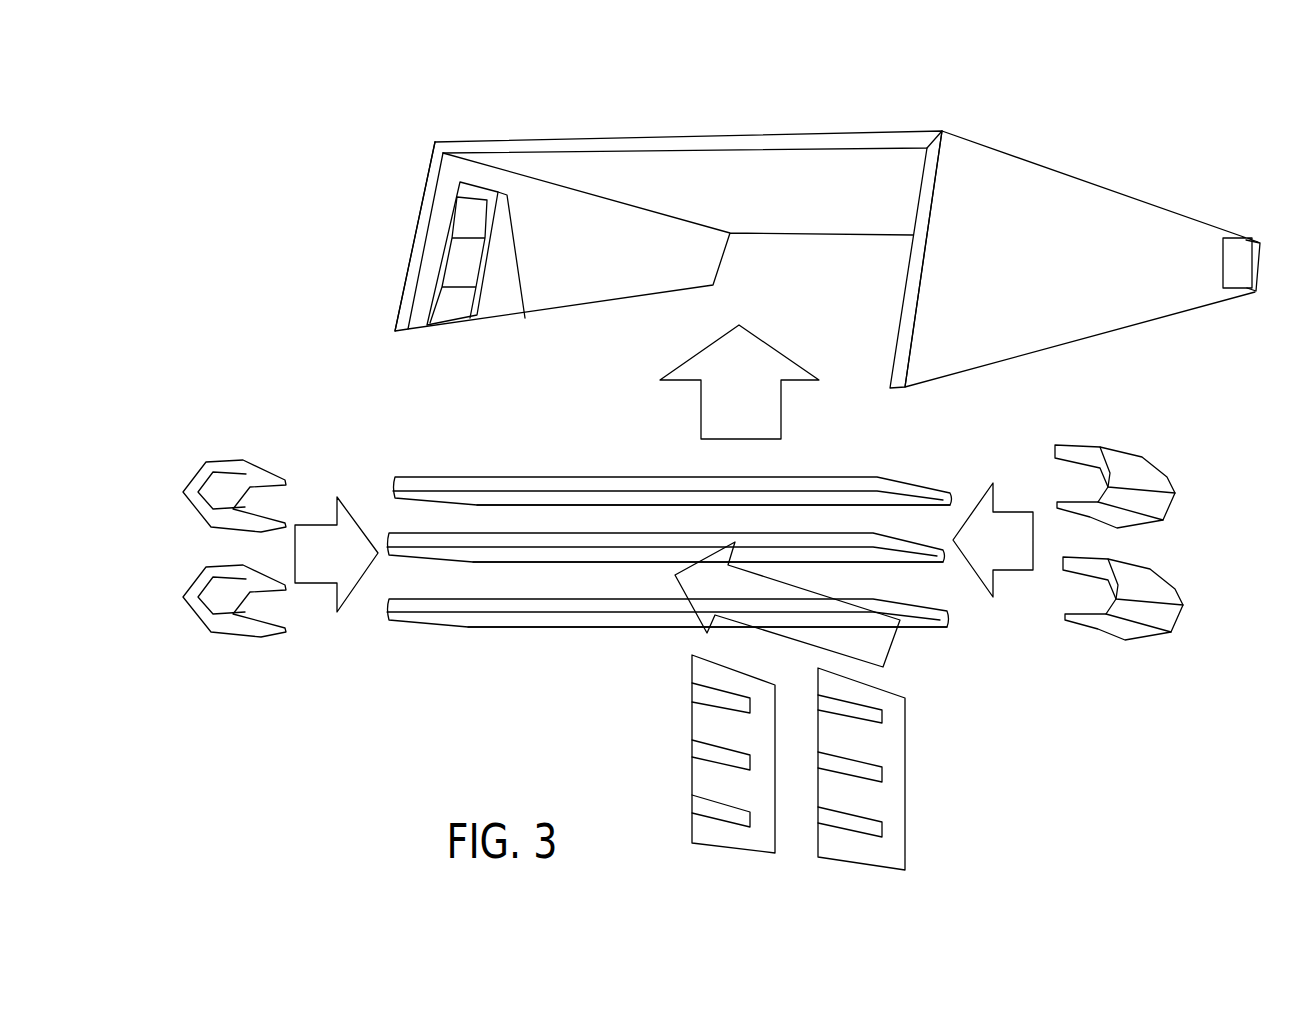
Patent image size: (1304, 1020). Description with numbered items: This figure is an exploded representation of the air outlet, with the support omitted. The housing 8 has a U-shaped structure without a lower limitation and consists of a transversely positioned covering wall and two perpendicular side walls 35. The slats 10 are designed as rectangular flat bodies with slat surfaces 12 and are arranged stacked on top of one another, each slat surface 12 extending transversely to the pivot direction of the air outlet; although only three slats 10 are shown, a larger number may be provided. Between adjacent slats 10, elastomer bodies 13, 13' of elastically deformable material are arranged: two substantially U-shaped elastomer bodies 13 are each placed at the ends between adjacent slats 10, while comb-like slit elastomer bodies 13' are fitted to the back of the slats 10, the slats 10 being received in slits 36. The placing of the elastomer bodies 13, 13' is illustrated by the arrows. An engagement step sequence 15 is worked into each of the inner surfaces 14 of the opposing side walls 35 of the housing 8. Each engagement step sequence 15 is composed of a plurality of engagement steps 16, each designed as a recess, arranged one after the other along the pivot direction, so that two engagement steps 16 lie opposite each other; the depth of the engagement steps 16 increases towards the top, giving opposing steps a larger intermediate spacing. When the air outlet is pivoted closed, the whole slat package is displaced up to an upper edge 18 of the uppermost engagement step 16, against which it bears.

The housing 8 is at (665, 138).
The side walls 35 is at (432, 168).
The engagement steps 16 is at (442, 285).
The engagement step sequence 15 is at (453, 303).
The upper edge 18 is at (525, 318).
The inner surfaces 14 is at (603, 265).
The elastomer bodies 13 is at (683, 585).
The slats 10 is at (593, 485).
The slat surfaces 12 is at (602, 553).
The slits 36 is at (703, 758).
The comb-like slit elastomer bodies 13' is at (798, 790).